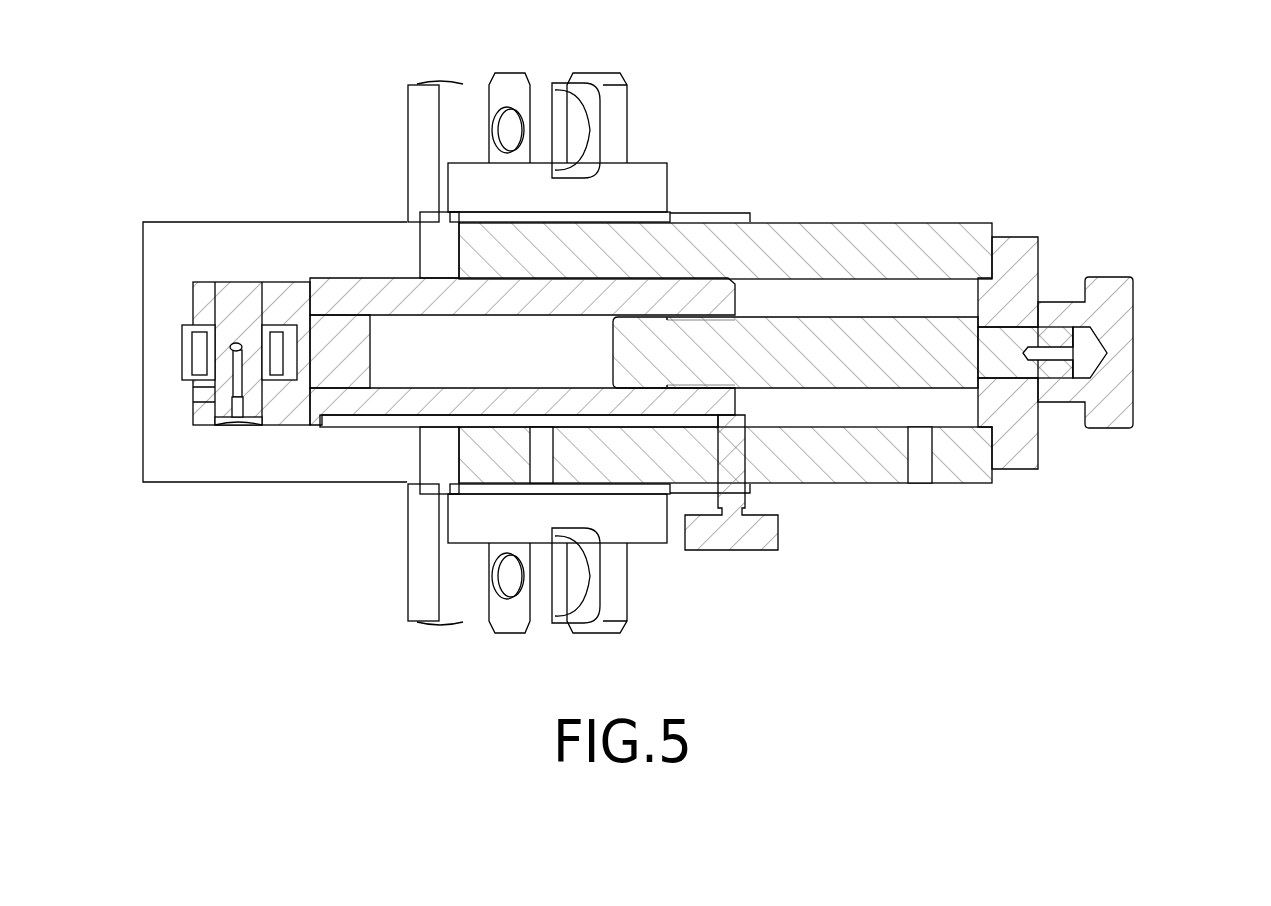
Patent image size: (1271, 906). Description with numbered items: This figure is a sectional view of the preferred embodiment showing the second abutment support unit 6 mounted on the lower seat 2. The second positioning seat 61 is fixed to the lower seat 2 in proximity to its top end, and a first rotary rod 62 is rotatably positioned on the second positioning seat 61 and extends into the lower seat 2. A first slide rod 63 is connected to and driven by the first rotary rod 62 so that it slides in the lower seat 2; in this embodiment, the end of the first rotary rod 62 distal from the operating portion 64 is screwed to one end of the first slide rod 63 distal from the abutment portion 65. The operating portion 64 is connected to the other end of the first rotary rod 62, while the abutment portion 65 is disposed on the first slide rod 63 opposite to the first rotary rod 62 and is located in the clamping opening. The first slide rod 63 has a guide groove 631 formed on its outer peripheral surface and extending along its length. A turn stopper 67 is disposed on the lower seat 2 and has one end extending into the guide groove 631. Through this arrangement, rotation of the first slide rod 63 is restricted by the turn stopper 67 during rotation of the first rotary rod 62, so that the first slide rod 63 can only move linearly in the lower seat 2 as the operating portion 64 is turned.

The lower seat 2 is at (858, 212).
The second abutment support unit 6 is at (1074, 222).
The second positioning seat 61 is at (1020, 237).
The first rotary rod 62 is at (887, 373).
The first slide rod 63 is at (347, 283).
The guide groove 631 is at (366, 420).
The operating portion 64 is at (1128, 327).
The abutment portion 65 is at (157, 313).
The turn stopper 67 is at (737, 537).